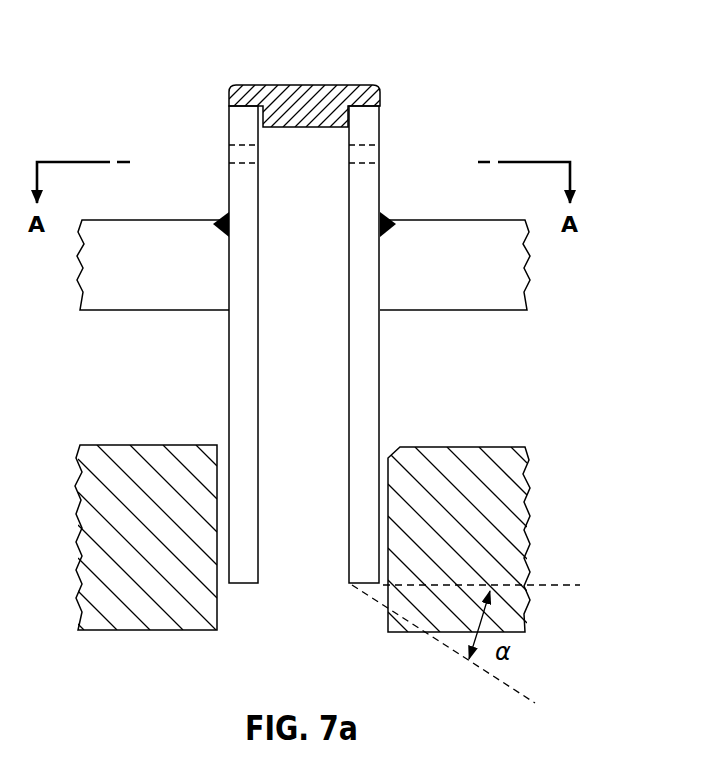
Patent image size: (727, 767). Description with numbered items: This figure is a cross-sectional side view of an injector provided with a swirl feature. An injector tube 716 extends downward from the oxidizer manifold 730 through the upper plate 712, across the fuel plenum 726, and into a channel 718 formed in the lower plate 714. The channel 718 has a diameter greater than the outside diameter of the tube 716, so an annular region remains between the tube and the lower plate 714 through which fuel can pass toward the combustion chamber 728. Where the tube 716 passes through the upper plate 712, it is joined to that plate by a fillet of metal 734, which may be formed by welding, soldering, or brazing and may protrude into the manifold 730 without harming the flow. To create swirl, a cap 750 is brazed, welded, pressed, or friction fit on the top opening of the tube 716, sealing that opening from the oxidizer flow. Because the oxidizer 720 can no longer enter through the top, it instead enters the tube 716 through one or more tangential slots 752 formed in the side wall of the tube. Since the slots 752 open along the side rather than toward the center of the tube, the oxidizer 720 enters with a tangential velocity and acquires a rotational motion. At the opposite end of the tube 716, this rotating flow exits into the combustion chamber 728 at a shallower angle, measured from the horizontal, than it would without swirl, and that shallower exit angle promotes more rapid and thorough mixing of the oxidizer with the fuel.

The upper plate 712 is at (483, 275).
The lower plate 714 is at (153, 508).
The tube 716 is at (216, 436).
The channel 718 is at (382, 492).
The oxidizer 720 is at (213, 148).
The fuel plenum 726 is at (475, 350).
The combustion chamber 728 is at (320, 682).
The oxidizer manifold 730 is at (323, 25).
The fillet of metal 734 is at (385, 218).
The cap 750 is at (255, 88).
The tangential slots 752 is at (229, 173).